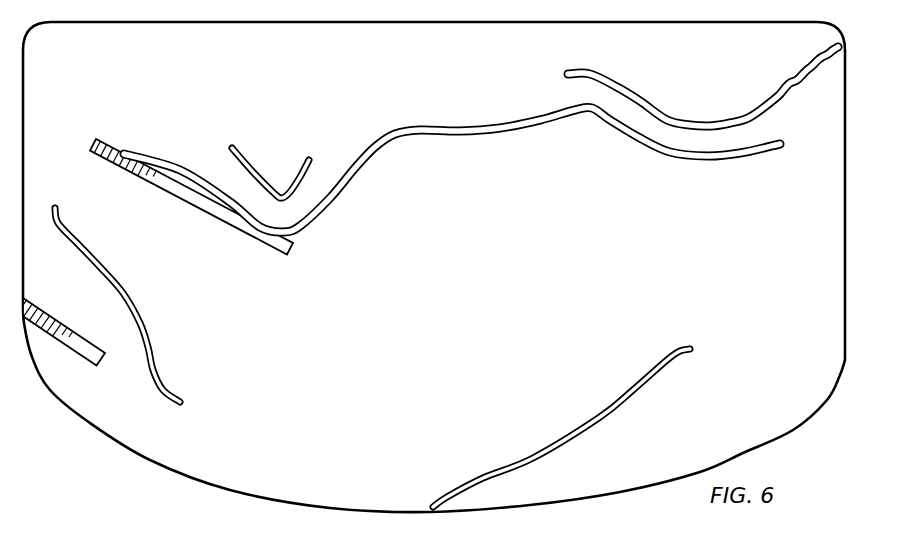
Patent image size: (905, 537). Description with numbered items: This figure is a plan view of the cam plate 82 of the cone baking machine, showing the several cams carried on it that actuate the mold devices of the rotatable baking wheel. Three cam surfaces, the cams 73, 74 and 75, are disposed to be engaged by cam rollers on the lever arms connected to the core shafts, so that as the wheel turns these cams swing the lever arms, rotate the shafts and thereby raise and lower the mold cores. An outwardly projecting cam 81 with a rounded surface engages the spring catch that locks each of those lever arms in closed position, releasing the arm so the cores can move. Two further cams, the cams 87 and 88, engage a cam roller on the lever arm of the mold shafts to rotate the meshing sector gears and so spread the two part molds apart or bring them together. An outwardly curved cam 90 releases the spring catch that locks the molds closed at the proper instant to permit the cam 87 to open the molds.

The cam plate 82 is at (402, 33).
The outwardly projecting cam 81 is at (105, 141).
The cam 73 is at (495, 128).
The cam 74 is at (252, 167).
The cam 75 is at (637, 101).
The outwardly curved cam 90 is at (42, 318).
The cam 88 is at (157, 377).
The cam 87 is at (535, 458).